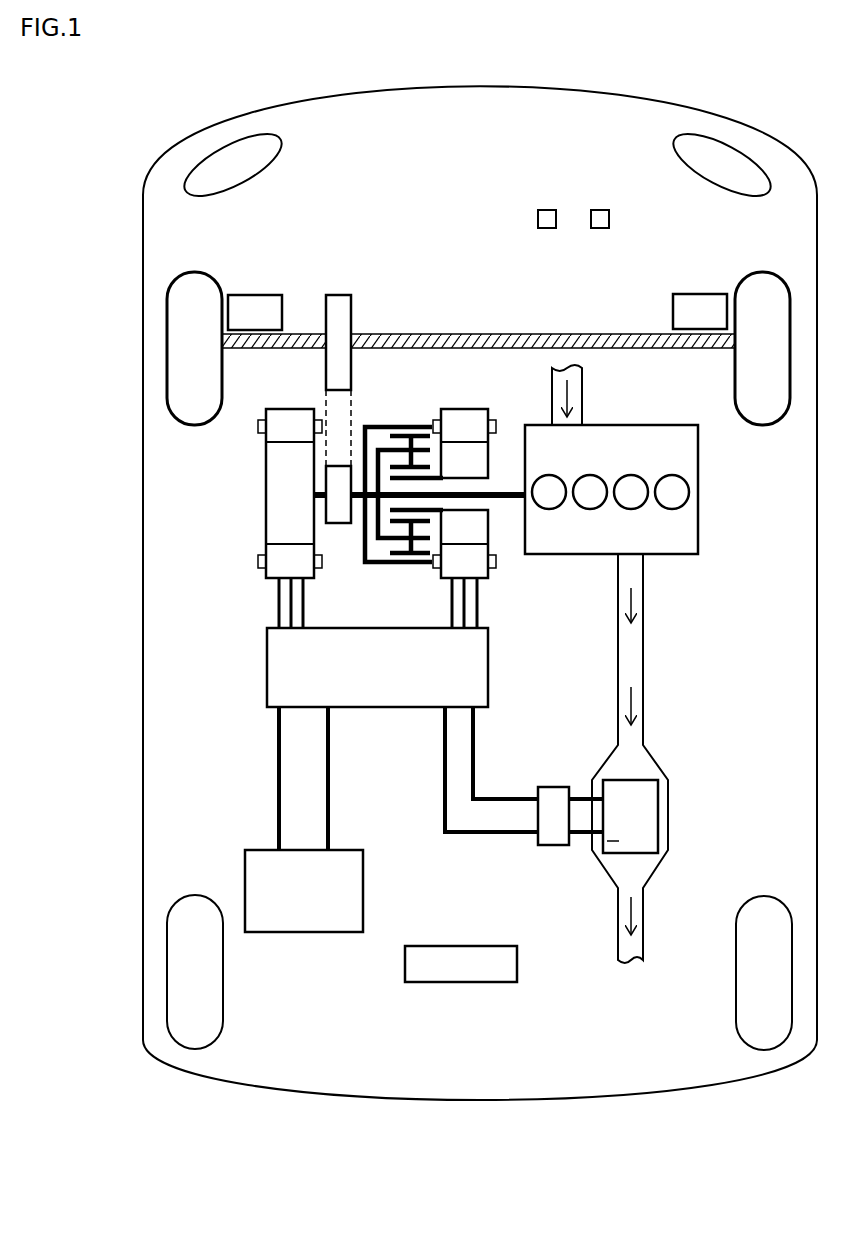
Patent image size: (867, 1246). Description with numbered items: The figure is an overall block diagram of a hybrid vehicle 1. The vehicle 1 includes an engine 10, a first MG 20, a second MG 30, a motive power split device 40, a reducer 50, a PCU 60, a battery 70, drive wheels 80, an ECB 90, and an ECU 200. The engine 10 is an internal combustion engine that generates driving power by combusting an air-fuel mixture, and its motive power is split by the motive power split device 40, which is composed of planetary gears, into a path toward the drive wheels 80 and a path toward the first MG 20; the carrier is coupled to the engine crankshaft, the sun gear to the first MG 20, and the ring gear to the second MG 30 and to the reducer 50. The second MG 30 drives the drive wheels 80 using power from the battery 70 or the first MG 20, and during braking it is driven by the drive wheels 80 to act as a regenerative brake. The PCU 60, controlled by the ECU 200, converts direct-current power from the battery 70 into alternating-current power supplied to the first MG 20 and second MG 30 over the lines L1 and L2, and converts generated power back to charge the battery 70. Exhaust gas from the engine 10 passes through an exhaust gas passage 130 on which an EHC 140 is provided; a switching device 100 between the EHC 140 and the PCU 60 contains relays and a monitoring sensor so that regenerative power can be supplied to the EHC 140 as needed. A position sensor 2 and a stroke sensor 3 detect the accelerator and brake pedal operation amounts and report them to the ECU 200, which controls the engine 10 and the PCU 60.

The vehicle 1 is at (489, 66).
The position sensor 2 is at (548, 208).
The stroke sensor 3 is at (601, 208).
The engine 10 is at (640, 423).
The first MG (motor generator) 20 is at (461, 407).
The second MG (motor generator) 30 is at (290, 407).
The motive power split device 40 is at (398, 426).
The reducer 50 is at (339, 293).
The PCU (power control unit) 60 is at (266, 664).
The battery 70 is at (365, 890).
The drive wheels 80 is at (200, 270).
The ECB (electronically controlled brake system) 90 is at (259, 293).
The switching device 100 is at (553, 786).
The exhaust gas passage 130 is at (644, 705).
The EHC (electrically heated catalyst) 140 is at (659, 815).
The ECU (electronic control unit) 200 is at (460, 984).
The power line L1 is at (479, 597).
The power line L2 is at (315, 597).